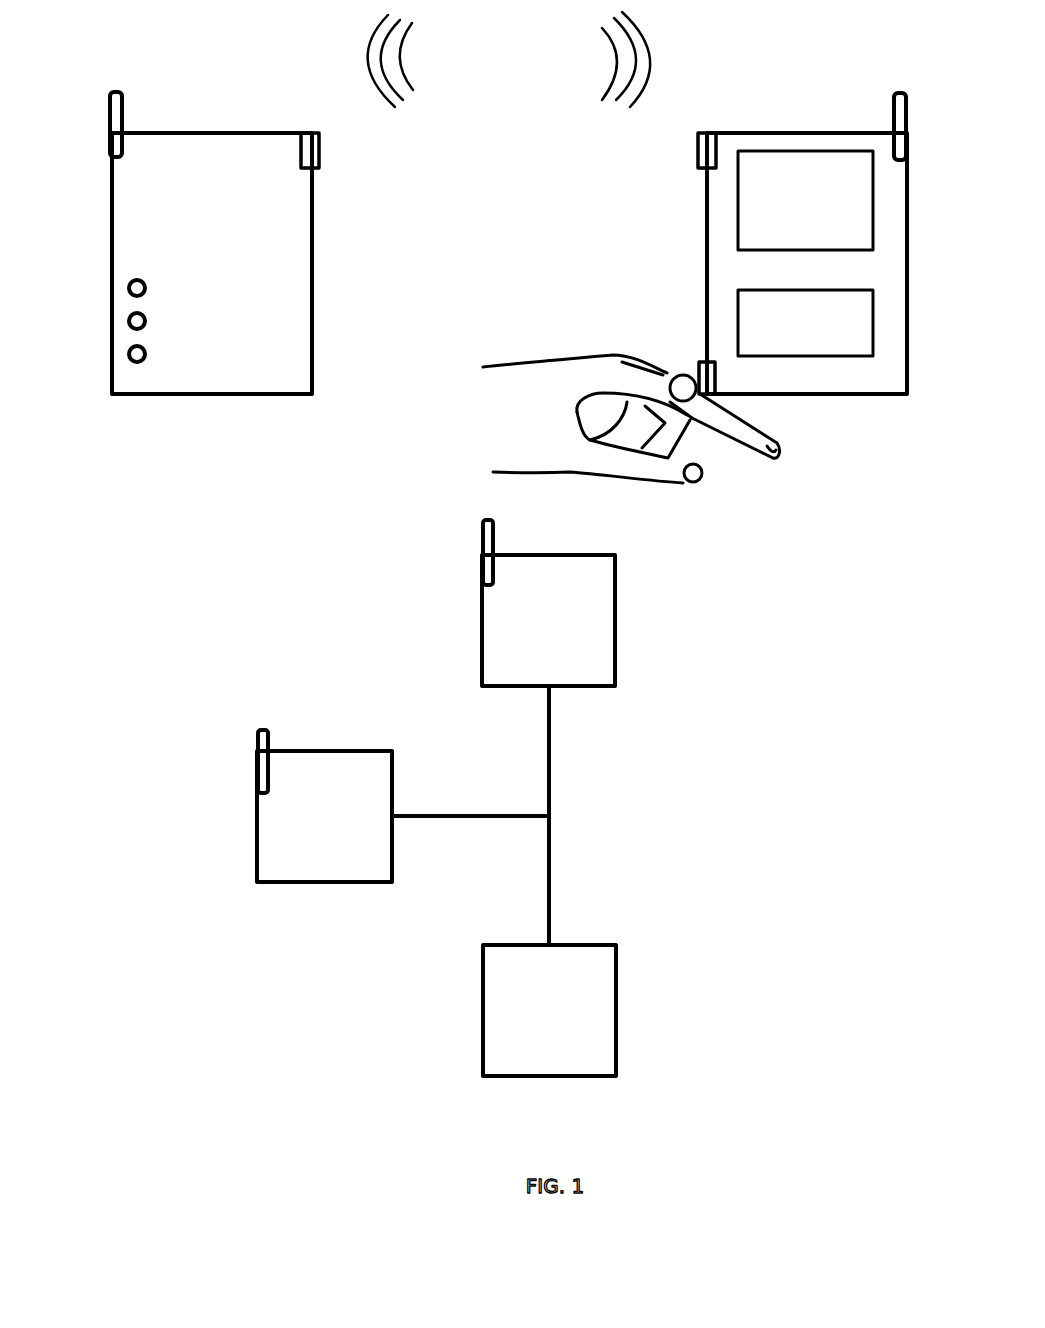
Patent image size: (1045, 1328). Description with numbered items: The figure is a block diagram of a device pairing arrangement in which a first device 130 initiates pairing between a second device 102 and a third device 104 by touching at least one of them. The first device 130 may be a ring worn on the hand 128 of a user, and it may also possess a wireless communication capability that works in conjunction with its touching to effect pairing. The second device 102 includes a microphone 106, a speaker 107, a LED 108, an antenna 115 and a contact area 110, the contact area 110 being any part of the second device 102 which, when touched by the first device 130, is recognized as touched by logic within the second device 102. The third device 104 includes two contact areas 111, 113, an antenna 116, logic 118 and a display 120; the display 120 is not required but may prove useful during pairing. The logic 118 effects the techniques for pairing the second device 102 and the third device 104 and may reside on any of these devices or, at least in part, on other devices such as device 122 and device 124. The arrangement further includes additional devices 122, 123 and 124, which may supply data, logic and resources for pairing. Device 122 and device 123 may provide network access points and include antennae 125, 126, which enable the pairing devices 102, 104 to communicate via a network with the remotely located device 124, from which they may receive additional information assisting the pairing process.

The second device 102 is at (220, 395).
The third device 104 is at (820, 395).
The microphone 106 is at (127, 293).
The speaker 107 is at (127, 326).
The LED 108 is at (127, 359).
The contact area 110 is at (295, 128).
The contact area 111 is at (690, 128).
The contact area 113 is at (718, 372).
The antenna 115 is at (98, 85).
The antenna 116 is at (885, 90).
The logic 118 is at (788, 334).
The display 120 is at (788, 211).
The device 122 is at (615, 615).
The device 123 is at (343, 883).
The device 124 is at (555, 1077).
The antenna 125 is at (487, 520).
The antenna 126 is at (262, 730).
The hand 128 is at (710, 488).
The first device 130 is at (683, 370).